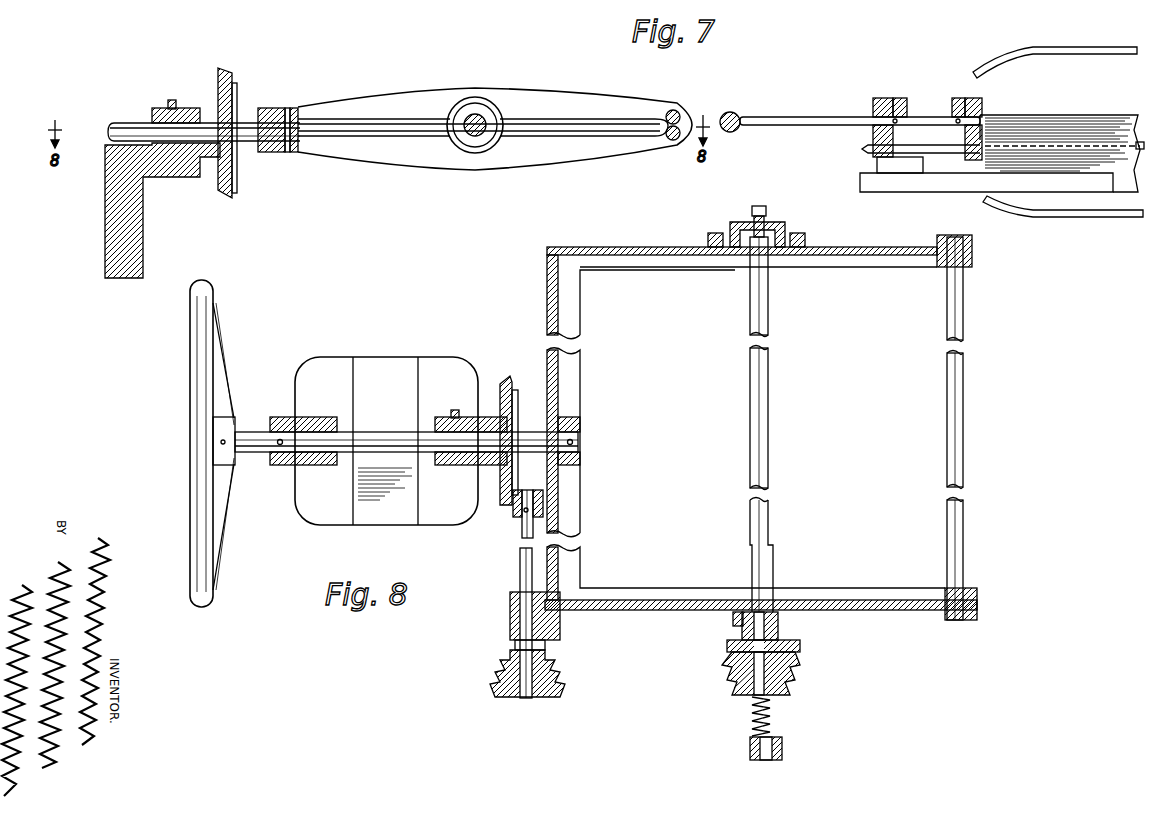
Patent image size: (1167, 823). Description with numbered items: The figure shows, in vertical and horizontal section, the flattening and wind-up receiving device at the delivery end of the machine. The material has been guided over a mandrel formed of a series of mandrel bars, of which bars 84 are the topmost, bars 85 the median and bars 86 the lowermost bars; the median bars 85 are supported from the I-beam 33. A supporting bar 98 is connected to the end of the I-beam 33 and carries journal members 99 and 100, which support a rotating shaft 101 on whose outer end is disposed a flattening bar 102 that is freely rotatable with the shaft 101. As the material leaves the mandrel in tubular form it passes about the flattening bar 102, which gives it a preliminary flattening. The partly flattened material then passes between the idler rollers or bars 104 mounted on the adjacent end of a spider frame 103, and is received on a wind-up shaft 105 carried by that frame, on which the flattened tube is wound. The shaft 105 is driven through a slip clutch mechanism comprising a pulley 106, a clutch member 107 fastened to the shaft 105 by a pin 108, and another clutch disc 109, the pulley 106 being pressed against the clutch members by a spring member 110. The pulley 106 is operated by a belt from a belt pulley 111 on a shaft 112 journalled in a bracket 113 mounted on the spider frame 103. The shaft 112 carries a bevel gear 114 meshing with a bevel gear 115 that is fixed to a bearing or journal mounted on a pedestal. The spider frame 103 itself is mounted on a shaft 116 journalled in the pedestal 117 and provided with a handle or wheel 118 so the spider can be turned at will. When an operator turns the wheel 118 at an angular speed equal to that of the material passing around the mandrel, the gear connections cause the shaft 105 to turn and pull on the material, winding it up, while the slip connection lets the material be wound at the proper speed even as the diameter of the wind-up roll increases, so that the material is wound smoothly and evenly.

In FIG. 7, the I-beam 33 is at (1100, 116).
In FIG. 7, the topmost mandrel bars 84 is at (1085, 48).
In FIG. 7, the median mandrel bars 85 is at (862, 150).
In FIG. 7, the lowermost mandrel bars 86 is at (1105, 220).
In FIG. 7, the supporting bar 98 is at (915, 183).
In FIG. 7, the journal member 99 is at (968, 96).
In FIG. 7, the journal member 100 is at (882, 96).
In FIG. 7, the rotating shaft 101 is at (808, 108).
In FIG. 7, the flattening bar 102 is at (735, 114).
In FIG. 7, the spider frame 103 is at (300, 112).
In FIG. 8, the spider frame 103 is at (582, 322).
In FIG. 7, the idler rollers 104 is at (679, 118).
In FIG. 8, the idler rollers 104 is at (960, 320).
In FIG. 7, the wind-up shaft 105 is at (478, 120).
In FIG. 8, the wind-up shaft 105 is at (770, 316).
In FIG. 8, the pulley 106 is at (792, 672).
In FIG. 8, the clutch member 107 is at (778, 638).
In FIG. 8, the pin 108 is at (740, 638).
In FIG. 8, the clutch disc 109 is at (802, 647).
In FIG. 8, the spring member 110 is at (772, 716).
In FIG. 8, the belt pulley 111 is at (556, 674).
In FIG. 8, the shaft 112 is at (512, 618).
In FIG. 8, the bracket 113 is at (510, 600).
In FIG. 8, the bevel gear 114 is at (513, 516).
In FIG. 7, the bevel gear 115 is at (232, 80).
In FIG. 8, the bevel gear 115 is at (506, 382).
In FIG. 7, the shaft 116 is at (125, 126).
In FIG. 8, the shaft 116 is at (395, 430).
In FIG. 7, the pedestal 117 is at (163, 106).
In FIG. 8, the pedestal 117 is at (315, 417).
In FIG. 8, the handle or wheel 118 is at (225, 378).